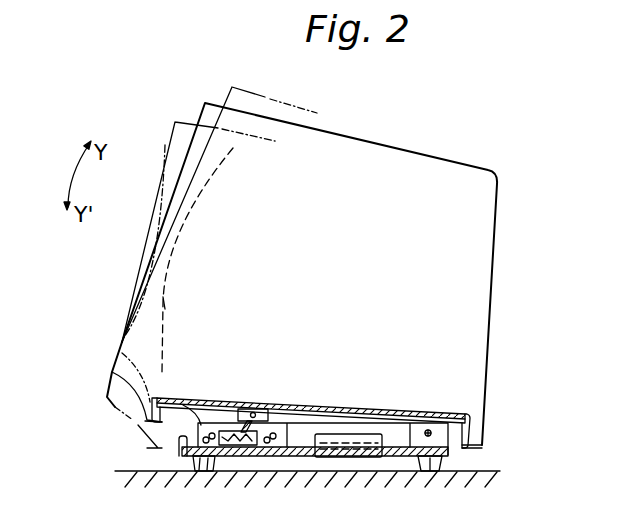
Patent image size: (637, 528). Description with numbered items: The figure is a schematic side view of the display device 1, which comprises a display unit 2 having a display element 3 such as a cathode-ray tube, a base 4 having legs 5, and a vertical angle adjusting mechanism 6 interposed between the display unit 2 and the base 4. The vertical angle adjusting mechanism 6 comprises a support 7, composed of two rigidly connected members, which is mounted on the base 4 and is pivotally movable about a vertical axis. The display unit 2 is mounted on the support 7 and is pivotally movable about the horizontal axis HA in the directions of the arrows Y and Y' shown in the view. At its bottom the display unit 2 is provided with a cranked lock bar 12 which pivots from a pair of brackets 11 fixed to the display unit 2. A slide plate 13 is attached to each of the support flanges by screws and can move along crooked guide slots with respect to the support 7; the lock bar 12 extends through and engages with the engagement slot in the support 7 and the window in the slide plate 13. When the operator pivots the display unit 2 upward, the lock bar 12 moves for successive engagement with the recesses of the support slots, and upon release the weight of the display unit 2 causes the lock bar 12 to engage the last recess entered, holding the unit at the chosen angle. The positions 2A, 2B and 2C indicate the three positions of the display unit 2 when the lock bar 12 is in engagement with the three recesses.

The display device 1 is at (514, 166).
The display unit 2 is at (433, 163).
The position of the display unit 2A is at (170, 146).
The position of the display unit 2B is at (203, 108).
The position of the display unit 2C is at (231, 86).
The display element 3 is at (163, 303).
The base 4 is at (338, 468).
The legs 5 is at (202, 468).
The vertical angle adjusting mechanism 6 is at (170, 429).
The support 7 is at (326, 432).
The brackets 11 is at (282, 410).
The lock bar 12 is at (240, 410).
The slide plate 13 is at (185, 404).
The horizontal axis HA is at (432, 433).